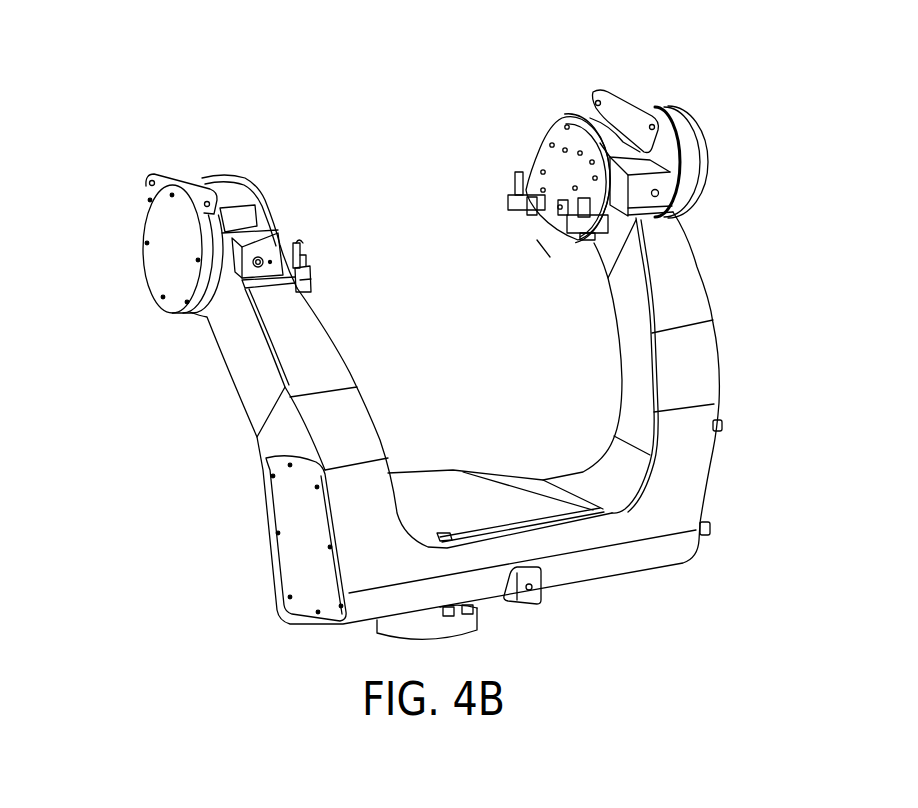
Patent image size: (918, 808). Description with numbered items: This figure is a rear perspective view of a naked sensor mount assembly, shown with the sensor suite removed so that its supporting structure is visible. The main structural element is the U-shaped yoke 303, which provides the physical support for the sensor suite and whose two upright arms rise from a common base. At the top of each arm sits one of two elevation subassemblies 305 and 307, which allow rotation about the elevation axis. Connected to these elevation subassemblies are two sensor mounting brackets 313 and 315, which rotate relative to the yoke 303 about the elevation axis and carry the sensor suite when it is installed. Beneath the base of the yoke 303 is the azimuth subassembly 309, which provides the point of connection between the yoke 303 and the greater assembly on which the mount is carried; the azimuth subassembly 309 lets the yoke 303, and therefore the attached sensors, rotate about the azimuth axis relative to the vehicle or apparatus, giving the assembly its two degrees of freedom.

The U-shaped yoke 303 is at (712, 473).
The elevation subassembly 305 is at (722, 127).
The elevation subassembly 307 is at (135, 282).
The azimuth subassembly 309 is at (488, 650).
The sensor mounting bracket 313 is at (544, 230).
The sensor mounting bracket 315 is at (306, 272).